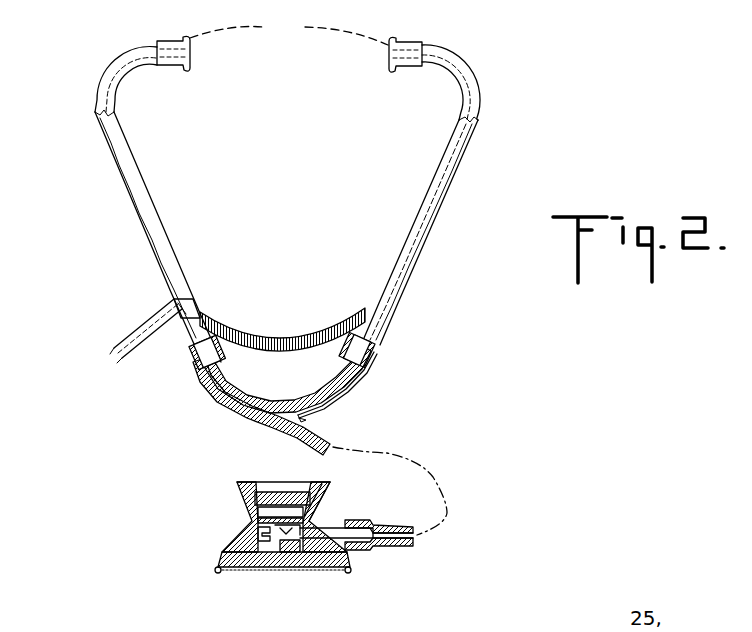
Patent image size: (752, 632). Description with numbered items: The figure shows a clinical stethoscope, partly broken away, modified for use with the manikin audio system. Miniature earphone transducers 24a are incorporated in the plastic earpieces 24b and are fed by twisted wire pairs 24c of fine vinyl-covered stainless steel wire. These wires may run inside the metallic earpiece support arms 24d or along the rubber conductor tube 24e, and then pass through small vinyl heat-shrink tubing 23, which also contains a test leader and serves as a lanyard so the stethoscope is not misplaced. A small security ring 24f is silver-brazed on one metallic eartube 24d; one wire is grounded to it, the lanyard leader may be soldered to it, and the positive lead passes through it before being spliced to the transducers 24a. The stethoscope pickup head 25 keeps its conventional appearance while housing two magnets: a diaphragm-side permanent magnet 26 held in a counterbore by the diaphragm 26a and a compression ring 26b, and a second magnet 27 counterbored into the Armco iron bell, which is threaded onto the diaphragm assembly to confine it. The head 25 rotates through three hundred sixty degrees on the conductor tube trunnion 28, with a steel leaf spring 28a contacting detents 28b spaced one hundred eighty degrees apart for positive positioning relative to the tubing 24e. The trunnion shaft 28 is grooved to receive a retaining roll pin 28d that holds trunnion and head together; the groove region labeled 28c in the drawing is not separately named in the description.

The vinyl heat-shrink tubing 23 is at (135, 326).
The earphone transducers 24a is at (289, 32).
The plastic earpieces 24b is at (388, 76).
The twisted wire pairs 24c is at (109, 62).
The metallic earpiece support arm 24d is at (108, 133).
The rubber conductor tube 24e is at (367, 380).
The security ring 24f is at (176, 298).
The stethoscope pickup head 25 is at (207, 469).
The permanent magnet 26 is at (284, 588).
The diaphragm 26a is at (283, 572).
The compression ring 26b is at (216, 572).
The magnet 27 is at (278, 493).
The conductor tube trunnion 28 is at (370, 532).
The steel leaf spring 28a is at (253, 542).
The detents 28b is at (257, 523).
The stem wall 28c is at (310, 528).
The retaining roll pin 28d is at (325, 527).